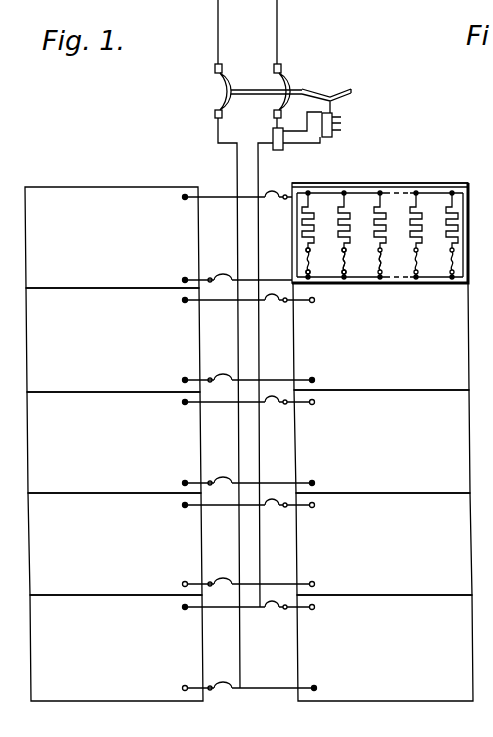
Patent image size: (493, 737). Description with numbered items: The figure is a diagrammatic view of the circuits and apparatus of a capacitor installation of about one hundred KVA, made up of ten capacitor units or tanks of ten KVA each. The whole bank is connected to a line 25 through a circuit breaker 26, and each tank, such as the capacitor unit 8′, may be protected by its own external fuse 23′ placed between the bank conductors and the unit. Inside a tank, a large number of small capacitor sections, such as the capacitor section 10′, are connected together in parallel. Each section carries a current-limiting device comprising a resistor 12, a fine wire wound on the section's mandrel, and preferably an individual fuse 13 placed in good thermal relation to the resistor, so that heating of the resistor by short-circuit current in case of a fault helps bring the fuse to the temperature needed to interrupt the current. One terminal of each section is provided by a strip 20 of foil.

The line 25 is at (276, 22).
The circuit breaker 26 is at (293, 82).
The strip of foil 20 is at (392, 242).
The capacitor unit or tank 8′ is at (368, 184).
The capacitor section 10′ is at (309, 204).
The resistor 12 is at (345, 246).
The individual fuse 13 is at (308, 258).
The external fuse 23′ is at (271, 192).